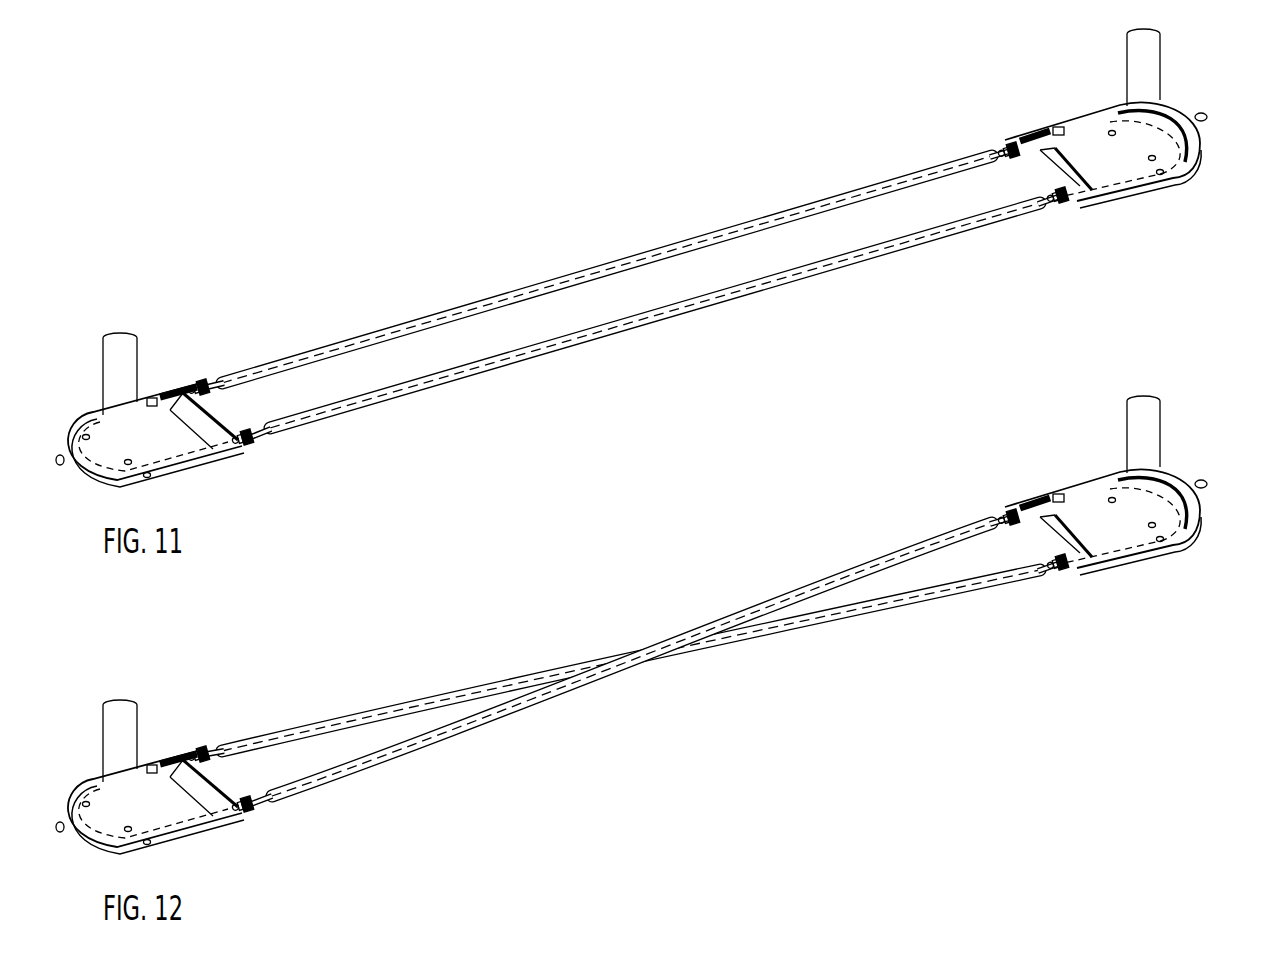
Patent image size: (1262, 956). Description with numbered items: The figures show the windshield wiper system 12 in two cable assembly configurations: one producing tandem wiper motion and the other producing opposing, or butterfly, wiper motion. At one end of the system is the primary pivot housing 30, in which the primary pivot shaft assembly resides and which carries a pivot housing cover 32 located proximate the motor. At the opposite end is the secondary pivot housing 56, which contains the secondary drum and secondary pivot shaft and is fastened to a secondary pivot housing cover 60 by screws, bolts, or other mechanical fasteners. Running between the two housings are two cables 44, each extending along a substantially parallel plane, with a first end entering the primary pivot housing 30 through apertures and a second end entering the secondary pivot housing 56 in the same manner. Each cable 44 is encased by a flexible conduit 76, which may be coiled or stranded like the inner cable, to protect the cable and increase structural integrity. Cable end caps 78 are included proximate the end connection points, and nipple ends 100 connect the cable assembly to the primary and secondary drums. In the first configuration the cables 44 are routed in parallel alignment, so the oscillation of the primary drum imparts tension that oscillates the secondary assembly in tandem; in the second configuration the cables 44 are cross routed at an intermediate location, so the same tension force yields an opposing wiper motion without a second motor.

In FIG. 11, the wiper system 12 is at (402, 282).
In FIG. 12, the wiper system 12 is at (402, 649).
In FIG. 11, the primary pivot housing 30 is at (1138, 66).
In FIG. 12, the primary pivot housing 30 is at (1138, 431).
In FIG. 11, the pivot housing cover 32 is at (1105, 175).
In FIG. 12, the pivot housing cover 32 is at (1105, 542).
In FIG. 11, the cable 44 is at (631, 292).
In FIG. 12, the cable 44 is at (631, 659).
In FIG. 11, the secondary pivot housing 56 is at (118, 372).
In FIG. 12, the secondary pivot housing 56 is at (118, 738).
In FIG. 11, the secondary pivot housing cover 60 is at (158, 452).
In FIG. 12, the secondary pivot housing cover 60 is at (160, 820).
In FIG. 11, the flexible conduit 76 is at (768, 283).
In FIG. 12, the flexible conduit 76 is at (838, 588).
In FIG. 11, the cable end caps 78 is at (199, 383).
In FIG. 12, the cable end caps 78 is at (199, 750).
In FIG. 11, the nipple ends 100 is at (112, 487).
In FIG. 12, the nipple ends 100 is at (112, 854).